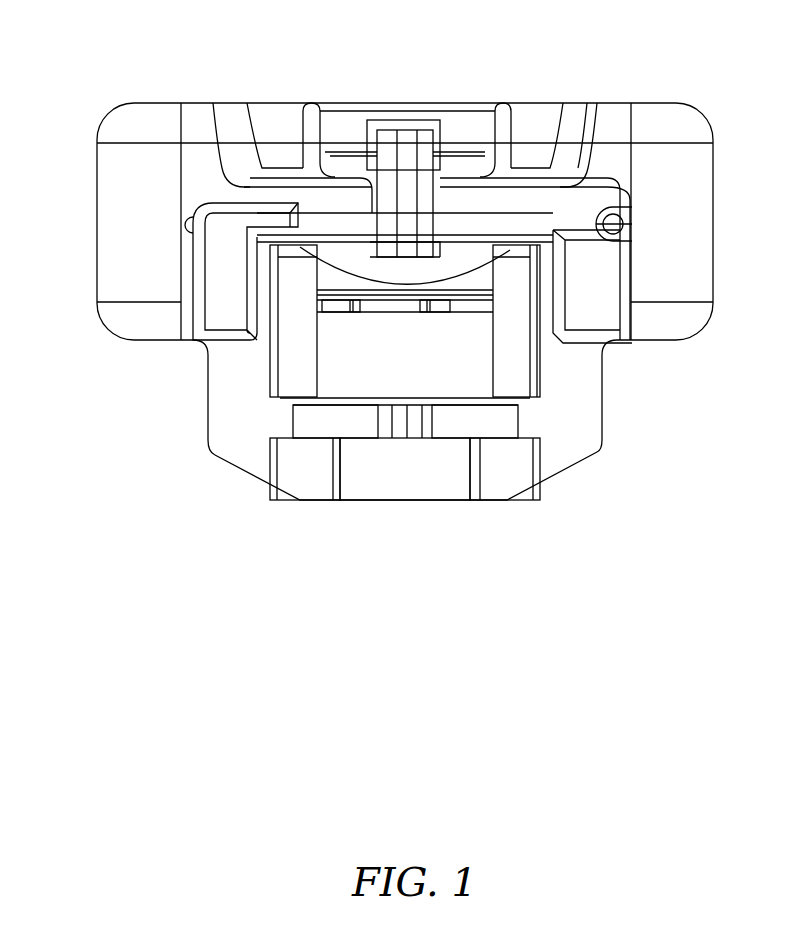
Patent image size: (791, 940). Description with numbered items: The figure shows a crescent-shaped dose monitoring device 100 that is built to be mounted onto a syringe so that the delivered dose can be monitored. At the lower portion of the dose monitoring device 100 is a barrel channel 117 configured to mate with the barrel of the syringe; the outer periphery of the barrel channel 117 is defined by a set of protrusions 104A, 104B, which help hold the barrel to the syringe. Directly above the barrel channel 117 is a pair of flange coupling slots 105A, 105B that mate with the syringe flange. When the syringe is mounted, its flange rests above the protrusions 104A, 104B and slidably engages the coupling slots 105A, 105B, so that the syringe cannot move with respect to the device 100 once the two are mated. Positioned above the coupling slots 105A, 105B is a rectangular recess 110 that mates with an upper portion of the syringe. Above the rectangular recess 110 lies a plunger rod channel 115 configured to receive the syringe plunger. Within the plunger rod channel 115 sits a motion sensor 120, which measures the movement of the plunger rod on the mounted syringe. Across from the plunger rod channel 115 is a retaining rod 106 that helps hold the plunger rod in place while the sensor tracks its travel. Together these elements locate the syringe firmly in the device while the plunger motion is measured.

The dose monitoring device 100 is at (152, 66).
The retaining rod 106 is at (497, 222).
The plunger rod channel 115 is at (438, 193).
The motion sensor 120 is at (387, 140).
The rectangular recess 110 is at (323, 352).
The flange coupling slot 105A is at (305, 428).
The flange coupling slot 105B is at (505, 430).
The protrusion 104A is at (300, 480).
The protrusion 104B is at (510, 475).
The barrel channel 117 is at (418, 493).